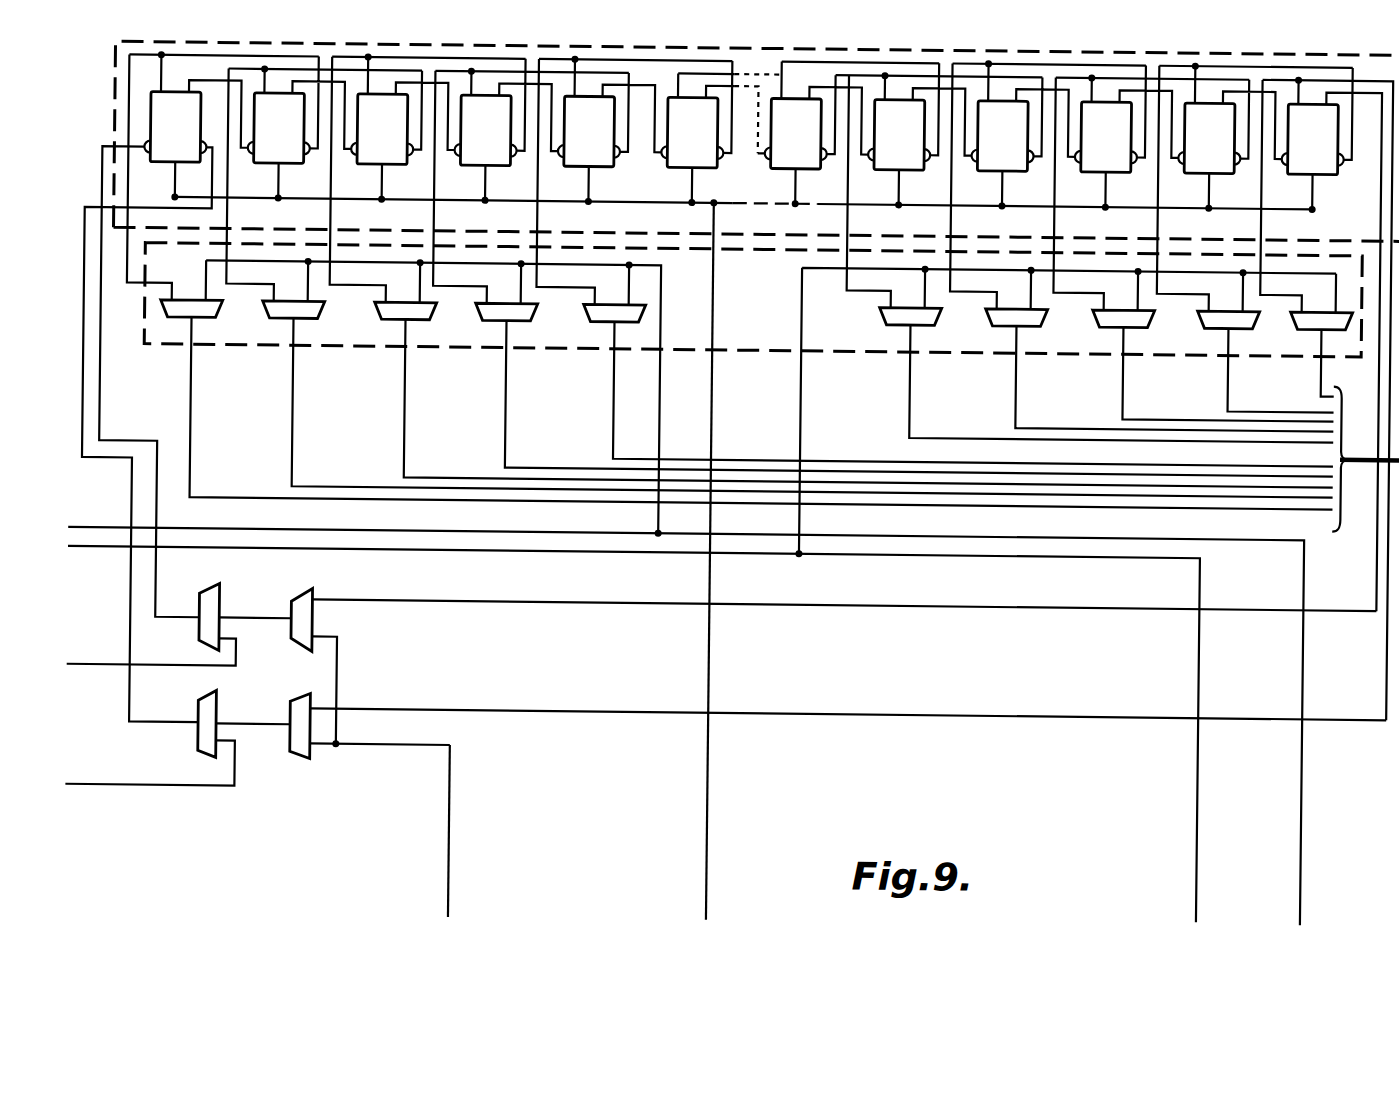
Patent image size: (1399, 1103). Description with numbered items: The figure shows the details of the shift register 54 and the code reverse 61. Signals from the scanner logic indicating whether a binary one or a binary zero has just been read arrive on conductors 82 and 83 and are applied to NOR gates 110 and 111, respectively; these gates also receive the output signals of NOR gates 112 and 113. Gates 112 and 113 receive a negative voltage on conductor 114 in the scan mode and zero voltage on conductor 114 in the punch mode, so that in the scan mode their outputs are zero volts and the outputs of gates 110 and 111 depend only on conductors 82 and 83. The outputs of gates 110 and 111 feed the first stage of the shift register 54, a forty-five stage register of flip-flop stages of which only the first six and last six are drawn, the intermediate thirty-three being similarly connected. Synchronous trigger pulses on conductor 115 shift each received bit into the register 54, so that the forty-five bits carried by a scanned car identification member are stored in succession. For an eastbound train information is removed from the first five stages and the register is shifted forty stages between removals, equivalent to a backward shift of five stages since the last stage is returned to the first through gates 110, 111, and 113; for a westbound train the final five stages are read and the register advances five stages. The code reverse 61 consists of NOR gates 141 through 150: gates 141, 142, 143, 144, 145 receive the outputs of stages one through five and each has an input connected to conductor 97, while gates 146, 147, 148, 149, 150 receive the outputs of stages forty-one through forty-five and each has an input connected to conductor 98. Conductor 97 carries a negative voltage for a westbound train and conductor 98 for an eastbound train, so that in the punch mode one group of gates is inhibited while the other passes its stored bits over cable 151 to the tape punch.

The shift register 54 is at (118, 55).
The code reverse 61 is at (150, 346).
The conductor 82 is at (114, 659).
The conductor 83 is at (106, 782).
The conductor 97 is at (664, 386).
The conductor 98 is at (805, 398).
The NOR gate 110 is at (228, 581).
The NOR gate 111 is at (226, 691).
The NOR gate 112 is at (320, 584).
The NOR gate 113 is at (318, 691).
The conductor 114 is at (396, 742).
The conductor 115 is at (716, 790).
The NOR gate 141 is at (226, 300).
The NOR gate 142 is at (328, 300).
The NOR gate 143 is at (440, 300).
The NOR gate 144 is at (541, 300).
The NOR gate 145 is at (649, 300).
The NOR gate 146 is at (945, 300).
The NOR gate 147 is at (1051, 300).
The NOR gate 148 is at (1158, 300).
The NOR gate 149 is at (1263, 300).
The NOR gate 150 is at (1356, 300).
The cable 151 is at (1358, 449).